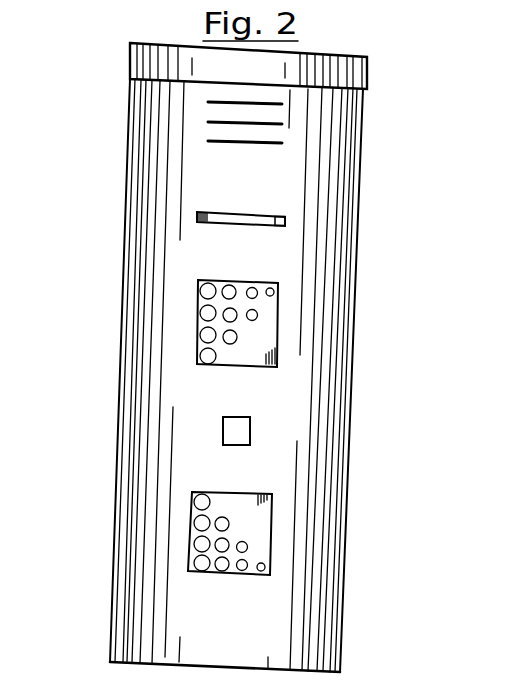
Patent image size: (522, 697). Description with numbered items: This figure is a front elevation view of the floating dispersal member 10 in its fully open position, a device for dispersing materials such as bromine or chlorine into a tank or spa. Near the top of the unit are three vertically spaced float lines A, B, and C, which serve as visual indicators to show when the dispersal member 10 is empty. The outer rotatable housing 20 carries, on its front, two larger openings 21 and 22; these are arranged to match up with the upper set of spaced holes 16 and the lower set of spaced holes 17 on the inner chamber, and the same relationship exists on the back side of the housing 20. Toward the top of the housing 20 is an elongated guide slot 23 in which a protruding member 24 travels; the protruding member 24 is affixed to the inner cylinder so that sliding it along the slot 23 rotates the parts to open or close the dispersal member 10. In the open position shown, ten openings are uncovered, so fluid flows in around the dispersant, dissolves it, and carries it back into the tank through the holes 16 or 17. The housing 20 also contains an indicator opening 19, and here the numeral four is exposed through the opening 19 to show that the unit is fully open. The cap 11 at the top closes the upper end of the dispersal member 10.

The dispersal member 10 is at (112, 407).
The top cap 11 is at (368, 72).
The upper set of spaced holes 16 is at (270, 288).
The lower set of spaced holes 17 is at (243, 573).
The indicator opening 19 is at (229, 446).
The rotatable housing 20 is at (353, 313).
The larger opening 21 is at (250, 577).
The larger opening 22 is at (258, 367).
The elongated guide slot 23 is at (227, 211).
The protruding member 24 is at (282, 214).
The float line A is at (208, 103).
The float line B is at (208, 122).
The float line C is at (208, 141).